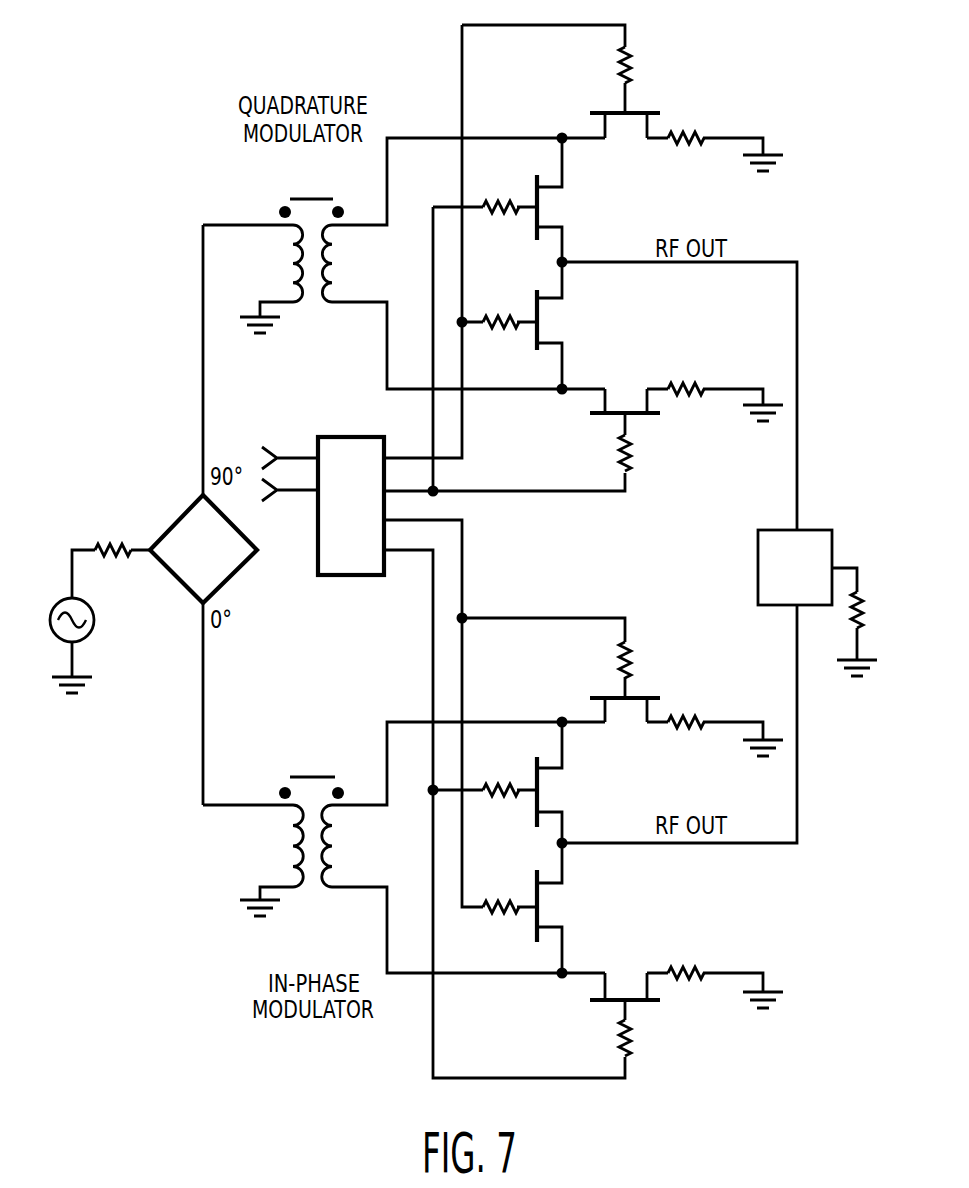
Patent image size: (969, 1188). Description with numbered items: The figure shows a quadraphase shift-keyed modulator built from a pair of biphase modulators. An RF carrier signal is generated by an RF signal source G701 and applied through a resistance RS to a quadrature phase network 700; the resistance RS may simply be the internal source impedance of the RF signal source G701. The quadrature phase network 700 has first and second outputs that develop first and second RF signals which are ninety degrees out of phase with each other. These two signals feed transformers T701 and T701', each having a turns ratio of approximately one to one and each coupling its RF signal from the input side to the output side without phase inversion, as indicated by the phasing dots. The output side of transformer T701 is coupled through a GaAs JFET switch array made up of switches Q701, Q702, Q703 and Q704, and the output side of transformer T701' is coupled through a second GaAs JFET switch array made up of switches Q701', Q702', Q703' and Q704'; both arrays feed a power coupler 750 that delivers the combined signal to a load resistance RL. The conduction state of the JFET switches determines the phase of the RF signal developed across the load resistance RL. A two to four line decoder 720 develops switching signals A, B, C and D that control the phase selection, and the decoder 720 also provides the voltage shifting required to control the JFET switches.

The quadrature phase network 700 is at (187, 512).
The two to four line decoder 720 is at (352, 437).
The power coupler 750 is at (818, 531).
The transformer T701 is at (273, 254).
The transformer T701' is at (273, 839).
The GaAs JFET switch Q701 is at (624, 124).
The GaAs JFET switch Q702 is at (560, 203).
The GaAs JFET switch Q703 is at (560, 328).
The GaAs JFET switch Q704 is at (623, 401).
The GaAs JFET switch Q701' is at (624, 712).
The GaAs JFET switch Q702' is at (561, 783).
The GaAs JFET switch Q703' is at (559, 914).
The GaAs JFET switch Q704' is at (624, 989).
The RF signal source G701 is at (97, 645).
The resistance RS is at (111, 555).
The load resistance RL is at (848, 622).